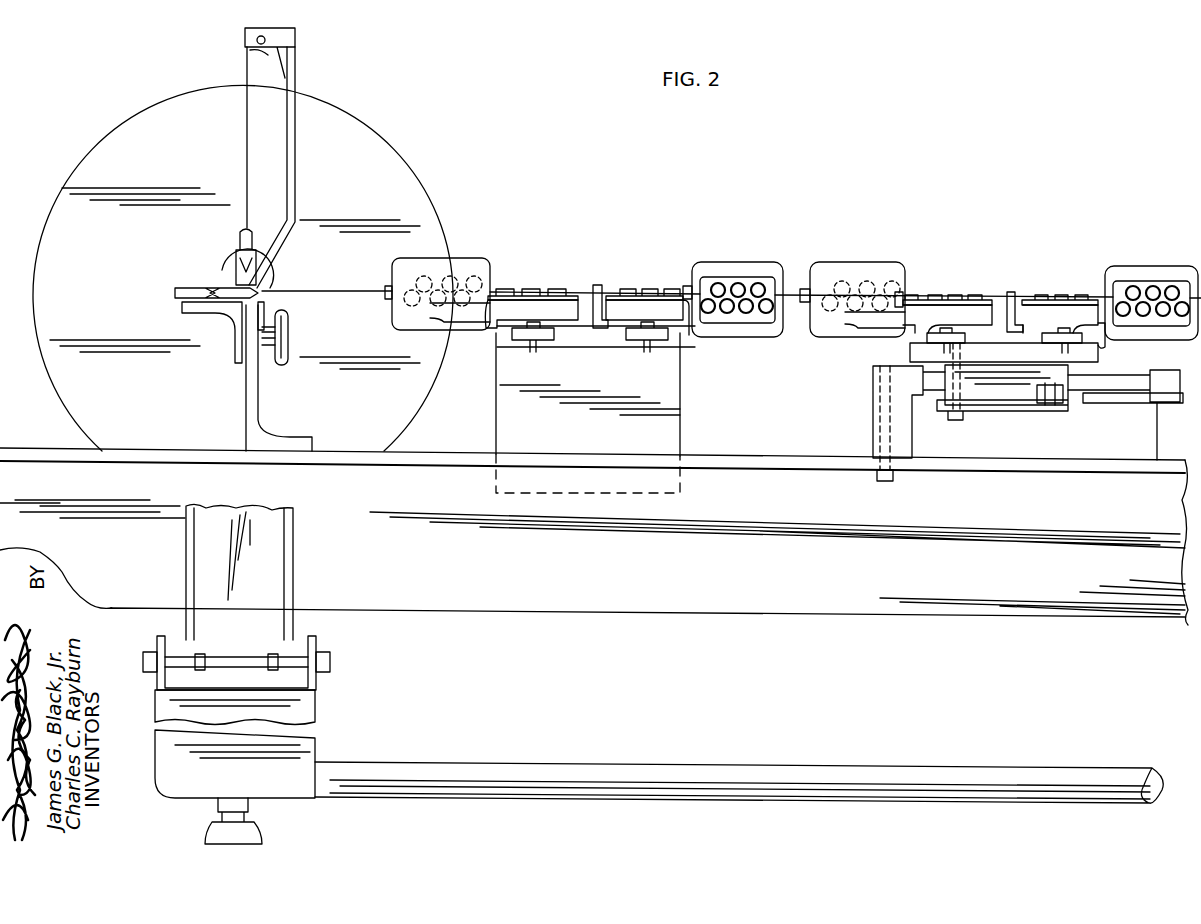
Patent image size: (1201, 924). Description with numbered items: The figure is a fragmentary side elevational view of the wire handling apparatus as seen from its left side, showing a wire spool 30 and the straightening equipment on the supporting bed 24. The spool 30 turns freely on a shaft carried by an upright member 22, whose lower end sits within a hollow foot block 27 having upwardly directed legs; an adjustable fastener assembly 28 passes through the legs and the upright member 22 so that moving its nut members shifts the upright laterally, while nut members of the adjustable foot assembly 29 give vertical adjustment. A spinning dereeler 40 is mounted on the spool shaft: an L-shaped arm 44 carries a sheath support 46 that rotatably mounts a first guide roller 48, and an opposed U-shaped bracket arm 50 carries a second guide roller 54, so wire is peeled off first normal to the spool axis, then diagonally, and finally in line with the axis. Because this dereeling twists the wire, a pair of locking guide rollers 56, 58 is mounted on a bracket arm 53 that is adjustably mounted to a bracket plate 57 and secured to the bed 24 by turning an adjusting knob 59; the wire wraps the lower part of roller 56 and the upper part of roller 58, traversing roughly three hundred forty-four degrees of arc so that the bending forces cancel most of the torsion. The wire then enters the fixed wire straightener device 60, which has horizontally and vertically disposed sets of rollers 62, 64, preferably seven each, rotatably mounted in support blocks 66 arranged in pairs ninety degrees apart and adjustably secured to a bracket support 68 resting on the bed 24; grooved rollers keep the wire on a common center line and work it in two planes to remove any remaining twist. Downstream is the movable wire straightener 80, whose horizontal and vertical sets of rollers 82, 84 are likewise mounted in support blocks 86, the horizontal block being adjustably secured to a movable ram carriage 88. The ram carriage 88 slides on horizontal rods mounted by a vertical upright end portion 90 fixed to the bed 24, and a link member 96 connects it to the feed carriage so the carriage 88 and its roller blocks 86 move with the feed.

The upright member 22 is at (262, 566).
The supporting bed 24 is at (779, 460).
The hollow foot block 27 is at (296, 719).
The adjustable fastener assembly 28 is at (340, 674).
The adjustable foot assembly 29 is at (264, 840).
The wire spool 30 is at (400, 139).
The spinning dereeler 40 is at (224, 141).
The L-shaped arm 44 is at (294, 156).
The sheath support 46 is at (287, 40).
The first guide roller 48 is at (250, 55).
The U-shaped bracket arm 50 is at (240, 235).
The bracket arm 53 is at (208, 308).
The second guide roller 54 is at (262, 276).
The locking guide roller 56 is at (193, 286).
The bracket plate 57 is at (258, 413).
The locking guide roller 58 is at (264, 289).
The adjusting knob 59 is at (290, 340).
The fixed wire straightener device 60 is at (674, 252).
The horizontally disposed set of rollers 62 is at (510, 288).
The vertically disposed set of rollers 64 is at (447, 280).
The support block 66 is at (462, 322).
The bracket support 68 is at (660, 388).
The movable wire straightener 80 is at (963, 262).
The horizontal set of rollers 82 is at (938, 294).
The vertical set of rollers 84 is at (834, 290).
The support block 86 is at (983, 305).
The movable ram carriage 88 is at (1005, 392).
The vertical upright end portion 90 is at (905, 428).
The link member 96 is at (1115, 402).